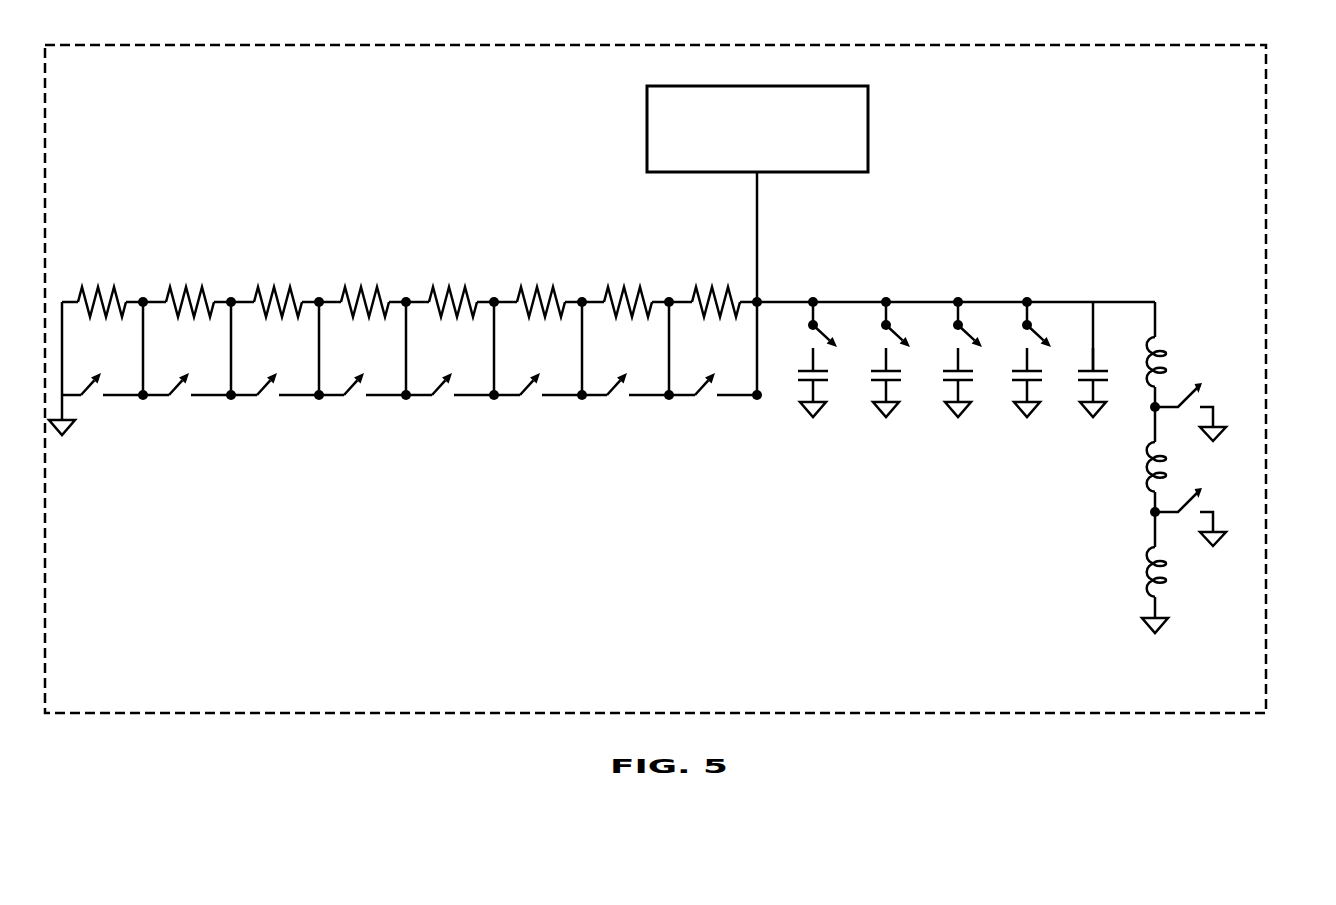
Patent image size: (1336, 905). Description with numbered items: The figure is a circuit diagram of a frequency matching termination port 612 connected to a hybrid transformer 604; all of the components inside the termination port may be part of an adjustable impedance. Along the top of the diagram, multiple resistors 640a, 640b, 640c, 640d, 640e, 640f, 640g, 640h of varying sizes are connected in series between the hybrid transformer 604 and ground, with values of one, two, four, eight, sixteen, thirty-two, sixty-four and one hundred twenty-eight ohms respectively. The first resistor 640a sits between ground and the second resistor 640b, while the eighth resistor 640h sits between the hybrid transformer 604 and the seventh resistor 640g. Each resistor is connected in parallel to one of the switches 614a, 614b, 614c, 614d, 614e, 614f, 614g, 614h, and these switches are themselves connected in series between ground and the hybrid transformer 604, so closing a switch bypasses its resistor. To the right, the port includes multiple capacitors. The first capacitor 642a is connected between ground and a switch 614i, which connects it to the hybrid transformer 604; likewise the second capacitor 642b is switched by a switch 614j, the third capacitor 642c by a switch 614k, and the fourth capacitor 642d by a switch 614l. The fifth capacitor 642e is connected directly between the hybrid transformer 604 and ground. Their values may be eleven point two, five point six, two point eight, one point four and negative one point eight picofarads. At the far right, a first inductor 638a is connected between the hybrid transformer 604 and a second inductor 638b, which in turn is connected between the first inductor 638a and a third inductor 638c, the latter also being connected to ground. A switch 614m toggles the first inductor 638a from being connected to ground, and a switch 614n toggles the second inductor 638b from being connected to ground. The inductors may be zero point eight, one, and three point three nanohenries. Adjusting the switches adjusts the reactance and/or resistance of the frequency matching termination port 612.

The hybrid transformer 604 is at (739, 153).
The frequency matching termination port 612 is at (863, 684).
The switch 614a is at (105, 415).
The switch 614b is at (193, 415).
The switch 614c is at (280, 415).
The switch 614d is at (368, 415).
The switch 614e is at (456, 415).
The switch 614f is at (543, 415).
The switch 614g is at (631, 415).
The switch 614h is at (719, 415).
The switch 614i is at (841, 305).
The switch 614j is at (913, 305).
The switch 614k is at (987, 305).
The switch 614l is at (1055, 305).
The switch 614m is at (1176, 397).
The switch 614n is at (1187, 518).
The resistor R1 640a is at (99, 253).
The resistor R2 640b is at (187, 253).
The resistor R3 640c is at (282, 253).
The resistor R4 640d is at (369, 253).
The resistor R5 640e is at (455, 253).
The resistor R6 640f is at (543, 253).
The resistor R7 640g is at (632, 253).
The resistor R8 640h is at (718, 253).
The capacitor C1 642a is at (835, 418).
The capacitor C2 642b is at (909, 418).
The capacitor C3 642c is at (982, 418).
The capacitor C4 642d is at (1055, 418).
The capacitor C5 642e is at (1103, 383).
The inductor L1 638a is at (1160, 347).
The inductor L2 638b is at (1160, 465).
The inductor L3 638c is at (1162, 572).